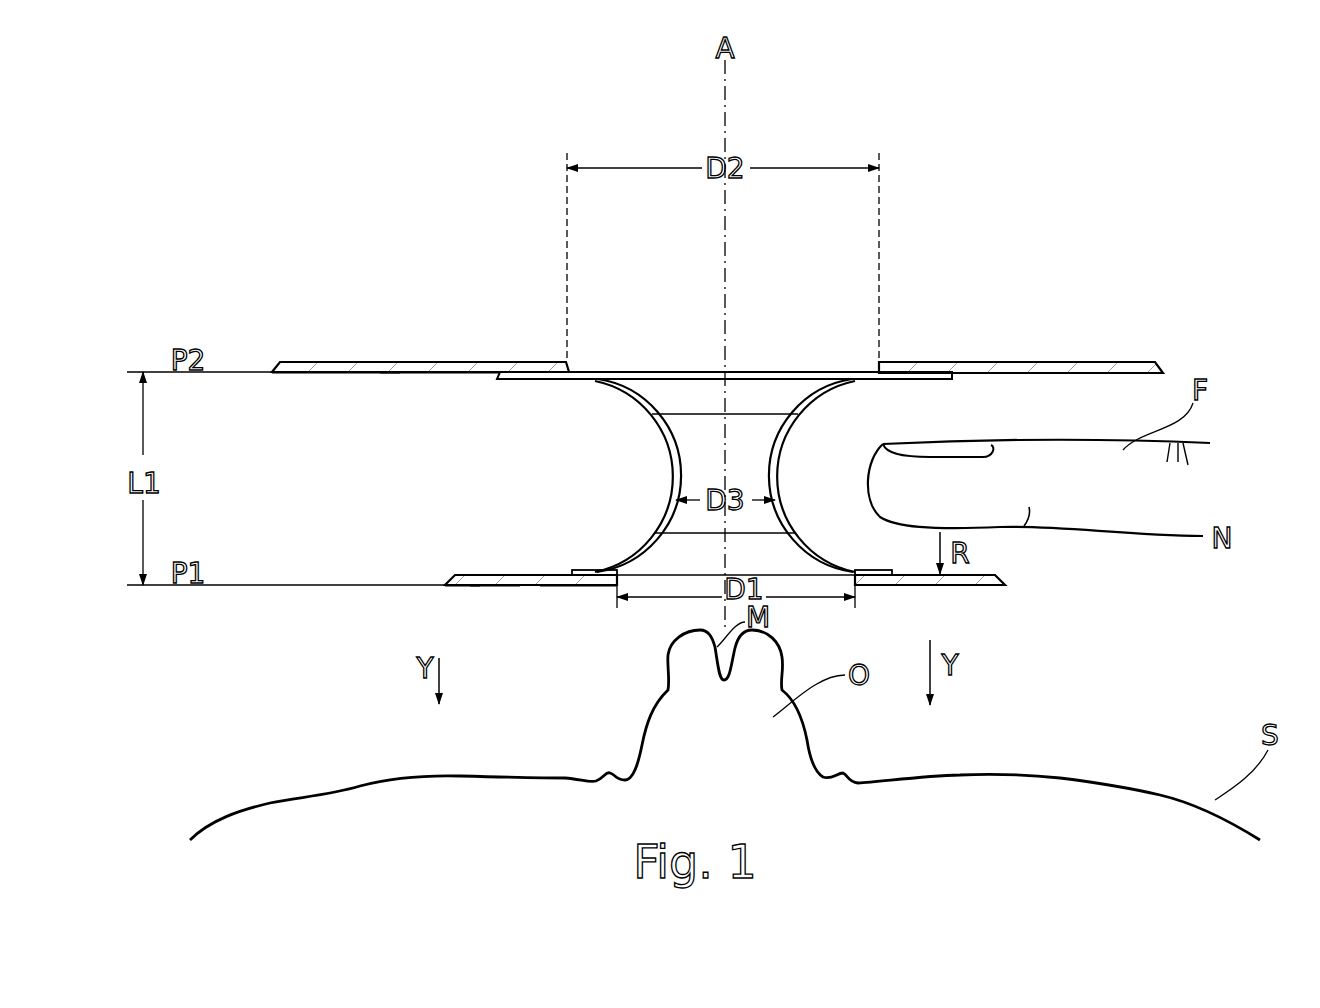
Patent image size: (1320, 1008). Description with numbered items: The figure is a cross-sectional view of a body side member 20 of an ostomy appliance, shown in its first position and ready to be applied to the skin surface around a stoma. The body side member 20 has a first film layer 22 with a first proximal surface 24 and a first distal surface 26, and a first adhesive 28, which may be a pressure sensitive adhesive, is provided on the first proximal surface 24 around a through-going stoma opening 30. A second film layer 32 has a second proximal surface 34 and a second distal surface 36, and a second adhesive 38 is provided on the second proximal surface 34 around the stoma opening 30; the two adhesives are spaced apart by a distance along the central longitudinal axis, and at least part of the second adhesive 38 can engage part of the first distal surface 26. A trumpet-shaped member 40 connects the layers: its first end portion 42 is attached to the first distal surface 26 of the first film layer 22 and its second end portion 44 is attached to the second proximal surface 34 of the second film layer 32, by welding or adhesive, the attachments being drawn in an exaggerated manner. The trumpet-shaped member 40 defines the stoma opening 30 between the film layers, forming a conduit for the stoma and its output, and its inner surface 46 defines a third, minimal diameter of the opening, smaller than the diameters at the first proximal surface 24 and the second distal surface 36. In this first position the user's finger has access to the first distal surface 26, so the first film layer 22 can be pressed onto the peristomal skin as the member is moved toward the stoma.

The body side member 20 is at (1047, 166).
The first film layer 22 is at (463, 585).
The first proximal surface 24 is at (488, 592).
The first distal surface 26 is at (497, 572).
The first adhesive 28 is at (582, 587).
The through-going stoma opening 30 is at (687, 396).
The second film layer 32 is at (1088, 362).
The second proximal surface 34 is at (300, 377).
The second distal surface 36 is at (315, 358).
The second adhesive 38 is at (405, 374).
The trumpet-shaped member 40 is at (640, 413).
The first end portion 42 is at (577, 570).
The second end portion 44 is at (905, 380).
The inner surface 46 is at (779, 468).